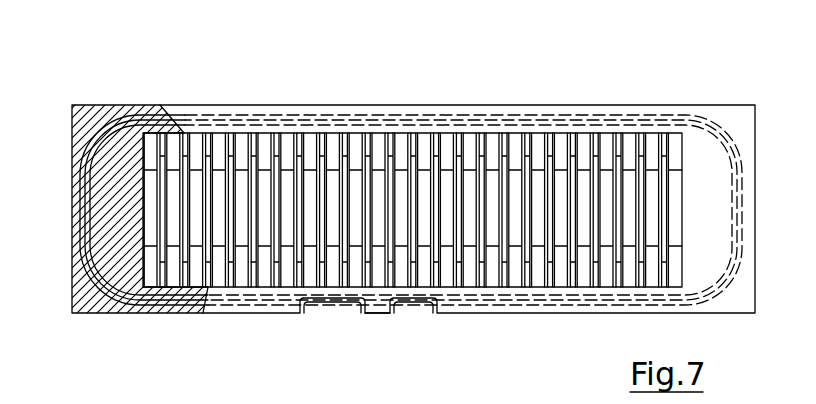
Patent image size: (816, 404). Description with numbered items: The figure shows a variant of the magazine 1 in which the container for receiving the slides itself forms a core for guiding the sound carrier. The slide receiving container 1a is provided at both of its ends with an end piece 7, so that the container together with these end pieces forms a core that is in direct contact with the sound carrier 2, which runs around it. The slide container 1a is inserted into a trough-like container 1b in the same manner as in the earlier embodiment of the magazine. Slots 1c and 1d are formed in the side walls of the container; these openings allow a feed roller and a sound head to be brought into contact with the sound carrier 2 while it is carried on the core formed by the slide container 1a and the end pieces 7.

The magazine 1 is at (373, 98).
The container 1a is at (200, 275).
The trough-like container 1b is at (136, 108).
The slot 1c is at (335, 313).
The slot 1d is at (405, 315).
The sound carrier 2 is at (307, 306).
The end piece 7 is at (703, 153).